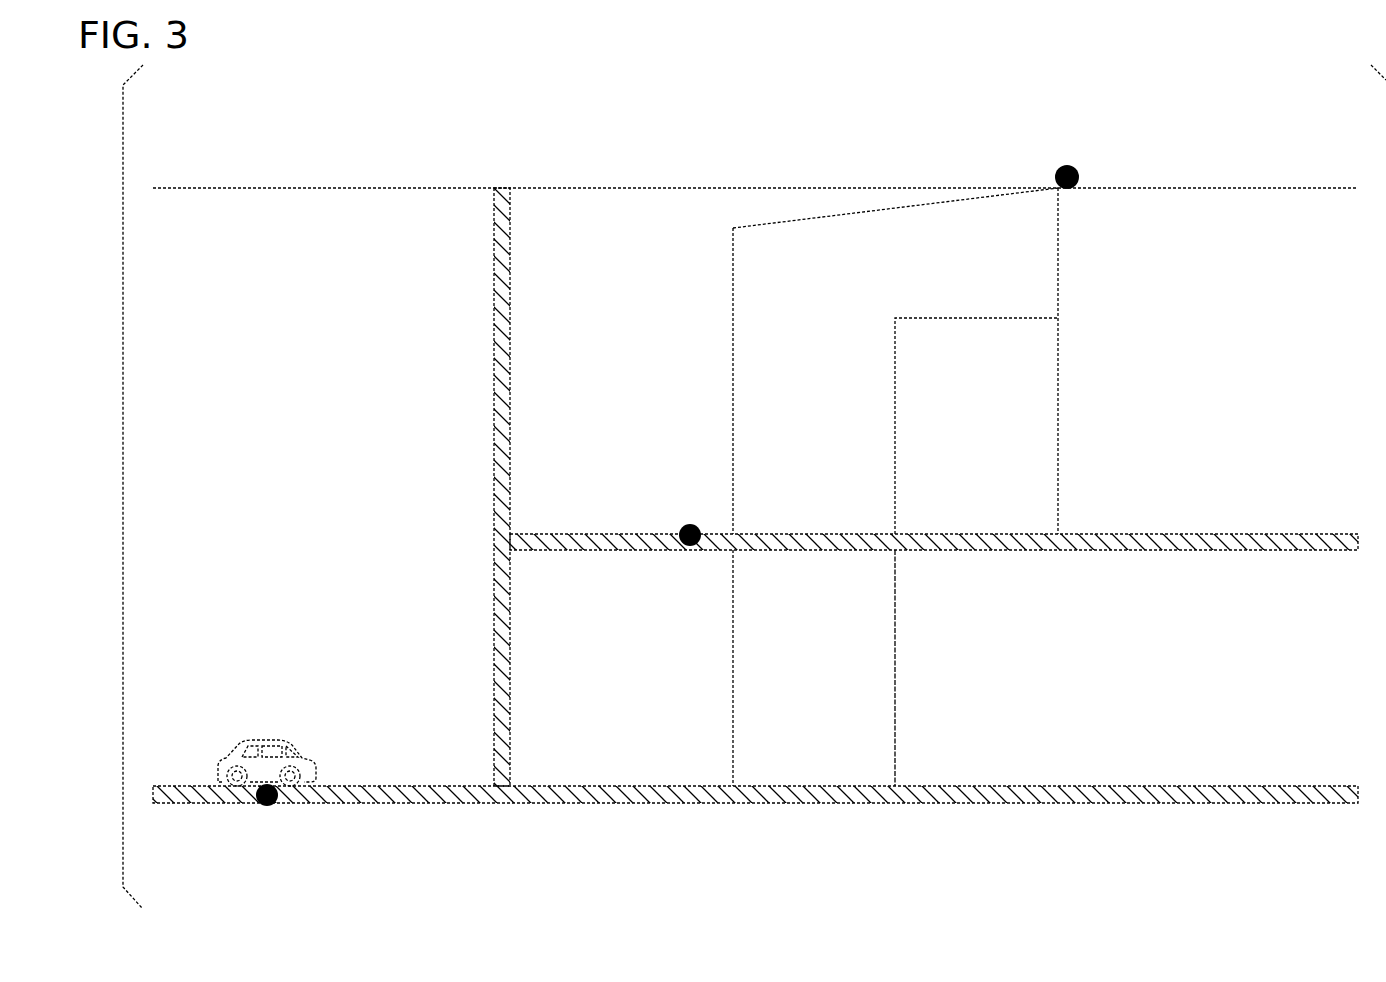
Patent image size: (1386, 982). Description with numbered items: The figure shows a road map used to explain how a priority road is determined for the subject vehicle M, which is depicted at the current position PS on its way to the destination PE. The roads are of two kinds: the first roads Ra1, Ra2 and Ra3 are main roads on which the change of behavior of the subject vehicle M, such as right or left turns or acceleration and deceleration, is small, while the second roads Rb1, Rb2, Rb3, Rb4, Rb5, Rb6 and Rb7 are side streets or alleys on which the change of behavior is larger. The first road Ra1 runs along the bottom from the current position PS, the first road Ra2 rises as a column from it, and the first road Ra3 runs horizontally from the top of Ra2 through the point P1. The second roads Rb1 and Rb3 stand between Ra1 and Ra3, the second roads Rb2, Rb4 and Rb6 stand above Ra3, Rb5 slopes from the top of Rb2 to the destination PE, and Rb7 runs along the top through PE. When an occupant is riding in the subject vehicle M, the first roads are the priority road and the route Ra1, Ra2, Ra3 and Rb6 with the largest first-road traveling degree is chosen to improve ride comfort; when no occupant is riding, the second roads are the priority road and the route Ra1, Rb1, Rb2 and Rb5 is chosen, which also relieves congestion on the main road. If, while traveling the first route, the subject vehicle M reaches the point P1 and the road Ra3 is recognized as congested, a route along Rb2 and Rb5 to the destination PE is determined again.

The first road Ra1 is at (425, 805).
The first road Ra2 is at (510, 325).
The first road Ra3 is at (597, 552).
The second road Rb1 is at (733, 670).
The second road Rb2 is at (733, 422).
The second road Rb3 is at (895, 670).
The second road Rb4 is at (895, 422).
The second road Rb5 is at (826, 218).
The second road Rb6 is at (1058, 422).
The second road Rb7 is at (692, 185).
The current position PS is at (267, 808).
The point P1 is at (690, 523).
The destination PE is at (1066, 165).
The subject vehicle M is at (259, 738).